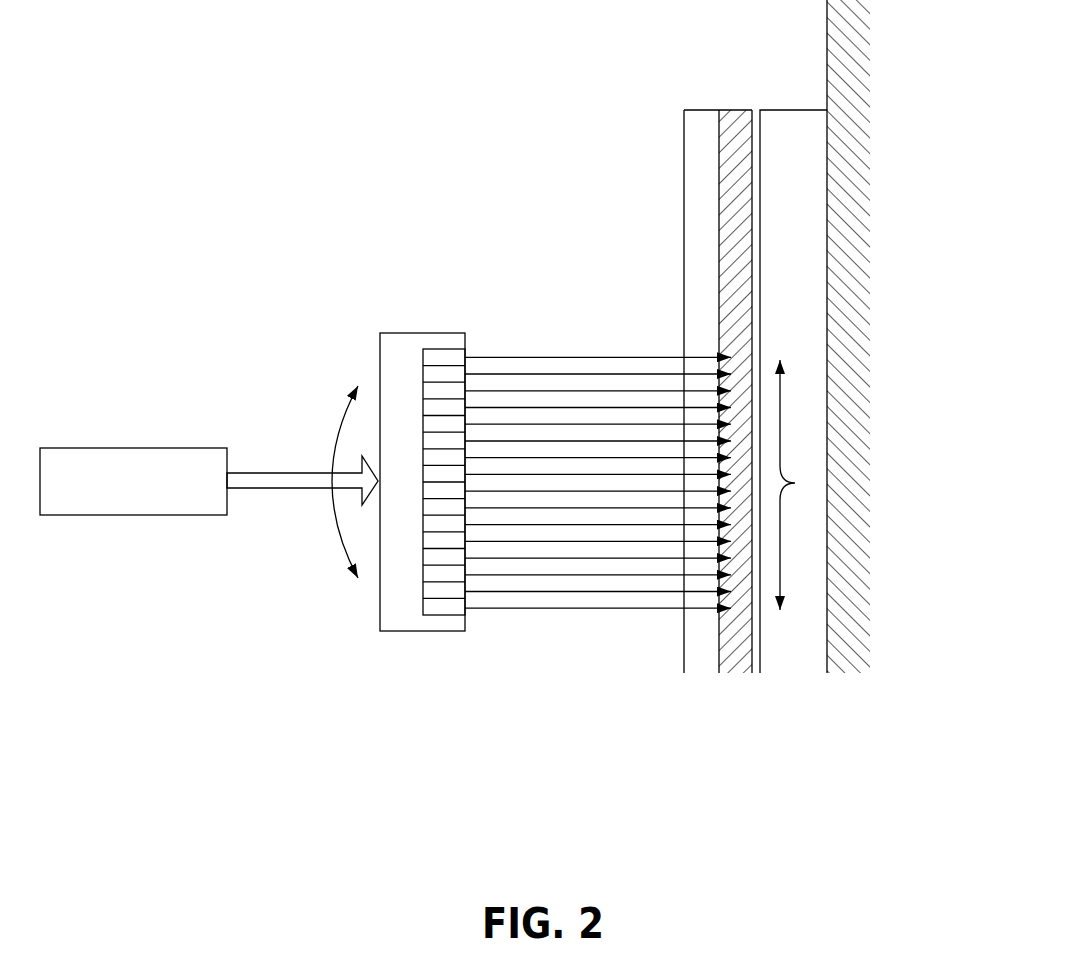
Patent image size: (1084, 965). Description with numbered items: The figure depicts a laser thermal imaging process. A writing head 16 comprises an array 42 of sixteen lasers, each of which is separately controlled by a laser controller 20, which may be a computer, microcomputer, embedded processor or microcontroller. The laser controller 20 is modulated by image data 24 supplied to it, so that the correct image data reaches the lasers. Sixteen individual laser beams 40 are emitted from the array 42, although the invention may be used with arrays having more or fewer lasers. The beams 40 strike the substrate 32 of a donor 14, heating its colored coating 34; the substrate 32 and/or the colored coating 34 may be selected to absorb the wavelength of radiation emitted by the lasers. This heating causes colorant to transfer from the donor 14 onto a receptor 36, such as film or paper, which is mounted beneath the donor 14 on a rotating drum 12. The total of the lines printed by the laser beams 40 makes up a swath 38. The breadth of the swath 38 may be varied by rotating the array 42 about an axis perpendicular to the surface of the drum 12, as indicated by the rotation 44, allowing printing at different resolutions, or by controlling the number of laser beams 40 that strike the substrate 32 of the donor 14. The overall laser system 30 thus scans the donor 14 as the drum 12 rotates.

The rotating drum 12 is at (848, 336).
The donor 14 is at (720, 64).
The writing head 16 is at (391, 494).
The laser controller 20 is at (157, 516).
The image data 24 is at (260, 490).
The laser system 30 is at (394, 433).
The substrate 32 is at (703, 108).
The colored coating 34 is at (737, 108).
The receptor 36 is at (799, 136).
The swath 38 is at (796, 483).
The laser beams 40 is at (580, 621).
The array 42 is at (443, 347).
The rotation of array 44 is at (332, 430).